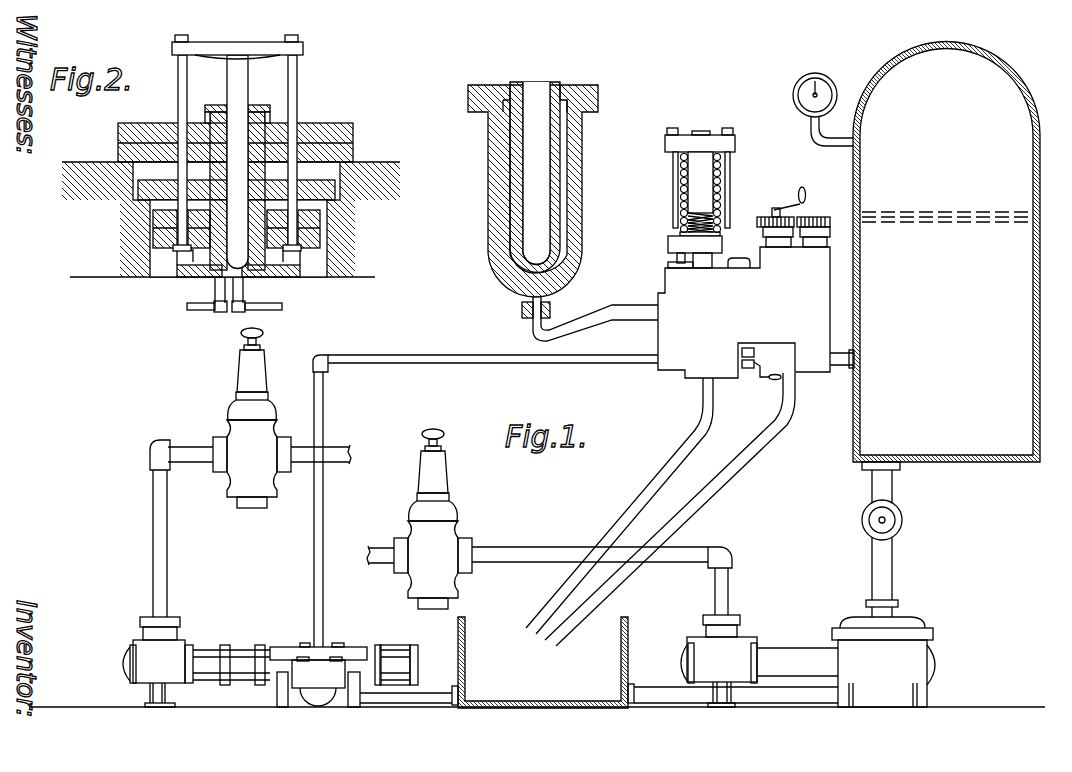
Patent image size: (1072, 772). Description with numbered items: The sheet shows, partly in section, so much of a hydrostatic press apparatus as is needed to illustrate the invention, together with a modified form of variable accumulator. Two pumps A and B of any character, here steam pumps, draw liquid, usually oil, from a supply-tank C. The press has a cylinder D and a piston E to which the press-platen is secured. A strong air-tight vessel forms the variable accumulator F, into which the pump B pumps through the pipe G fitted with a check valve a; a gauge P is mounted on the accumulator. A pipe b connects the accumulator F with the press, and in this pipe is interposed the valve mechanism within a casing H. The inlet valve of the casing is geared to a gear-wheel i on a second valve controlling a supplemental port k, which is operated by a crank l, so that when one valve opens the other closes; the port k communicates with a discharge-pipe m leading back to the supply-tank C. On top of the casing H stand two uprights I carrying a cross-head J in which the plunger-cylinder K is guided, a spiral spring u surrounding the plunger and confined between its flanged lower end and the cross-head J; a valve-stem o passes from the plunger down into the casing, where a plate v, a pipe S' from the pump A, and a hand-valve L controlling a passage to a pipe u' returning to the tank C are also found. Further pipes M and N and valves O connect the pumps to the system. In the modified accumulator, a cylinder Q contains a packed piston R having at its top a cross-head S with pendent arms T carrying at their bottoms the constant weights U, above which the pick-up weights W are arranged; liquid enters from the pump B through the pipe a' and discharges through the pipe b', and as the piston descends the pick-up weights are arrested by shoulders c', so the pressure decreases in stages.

In FIG. 2, the cross-head S is at (237, 39).
In FIG. 2, the packed piston R is at (248, 70).
In FIG. 2, the pendent arms T is at (232, 153).
In FIG. 2, the cylinder Q is at (243, 184).
In FIG. 2, the pick-up weights W is at (246, 142).
In FIG. 2, the shoulders c' is at (231, 208).
In FIG. 2, the constant weights U is at (244, 262).
In FIG. 2, the pipe a' is at (257, 294).
In FIG. 2, the pipe b' is at (206, 294).
In FIG. 1, the variable accumulator F is at (1033, 306).
In FIG. 1, the pressure gauge P is at (823, 98).
In FIG. 1, the pipe G is at (886, 539).
In FIG. 1, the check valve a is at (888, 520).
In FIG. 1, the pump B is at (808, 661).
In FIG. 1, the pipe N is at (602, 569).
In FIG. 1, the supply-tank C is at (599, 662).
In FIG. 1, the pipe u' is at (619, 506).
In FIG. 1, the discharge-pipe m is at (670, 509).
In FIG. 1, the casing H is at (744, 312).
In FIG. 1, the hand-valve L is at (761, 375).
In FIG. 1, the pipe b is at (688, 340).
In FIG. 1, the pipe S' is at (485, 501).
In FIG. 1, the cylinder D is at (533, 191).
In FIG. 1, the piston E is at (535, 177).
In FIG. 1, the cross-head J is at (686, 144).
In FIG. 1, the uprights I is at (696, 190).
In FIG. 1, the plunger-cylinder K is at (700, 192).
In FIG. 1, the spiral spring u is at (718, 193).
In FIG. 1, the bottom plate v is at (722, 246).
In FIG. 1, the valve-stem o is at (675, 258).
In FIG. 1, the gear-wheel i is at (770, 228).
In FIG. 1, the supplemental port k is at (819, 229).
In FIG. 1, the crank l is at (789, 202).
In FIG. 1, the pipe M is at (250, 528).
In FIG. 1, the valves O is at (342, 468).
In FIG. 1, the pump A is at (270, 662).